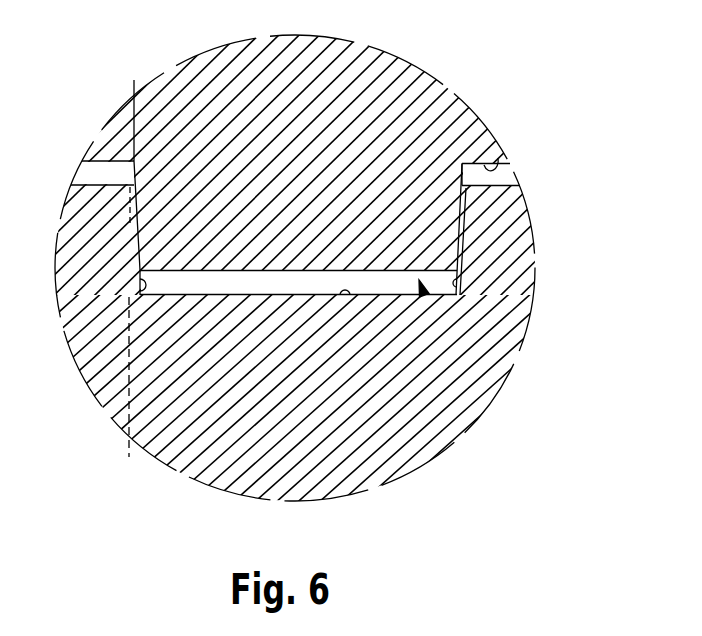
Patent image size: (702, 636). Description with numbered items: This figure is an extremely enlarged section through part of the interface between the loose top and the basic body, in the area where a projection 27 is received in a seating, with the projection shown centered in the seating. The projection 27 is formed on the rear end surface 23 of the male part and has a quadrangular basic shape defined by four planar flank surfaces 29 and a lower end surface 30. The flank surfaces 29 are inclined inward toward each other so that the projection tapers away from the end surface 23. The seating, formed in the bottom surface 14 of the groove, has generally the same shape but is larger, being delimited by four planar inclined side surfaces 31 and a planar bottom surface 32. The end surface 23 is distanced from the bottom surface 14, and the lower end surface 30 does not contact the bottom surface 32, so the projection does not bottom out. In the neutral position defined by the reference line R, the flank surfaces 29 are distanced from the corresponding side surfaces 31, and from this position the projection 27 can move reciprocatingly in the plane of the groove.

The bottom surface 14 is at (500, 186).
The rear end surface 23 is at (498, 160).
The projection 27 is at (424, 295).
The flank surfaces 29 is at (135, 222).
The lower end surface 30 is at (248, 272).
The side surfaces 31 is at (128, 292).
The bottom surface 32 is at (345, 292).
The reference line R is at (134, 92).